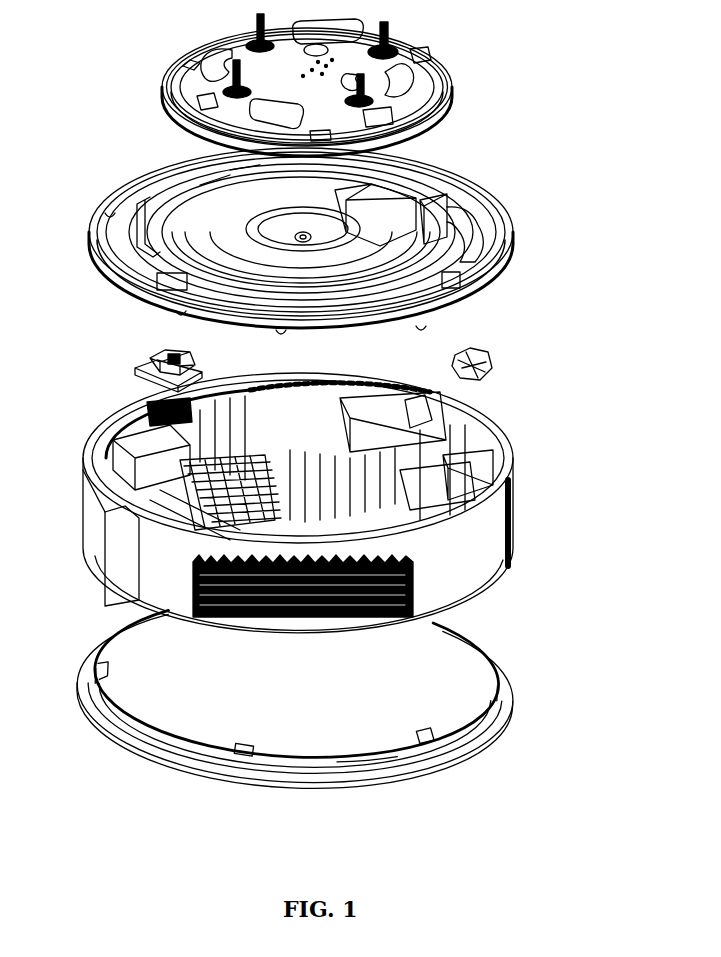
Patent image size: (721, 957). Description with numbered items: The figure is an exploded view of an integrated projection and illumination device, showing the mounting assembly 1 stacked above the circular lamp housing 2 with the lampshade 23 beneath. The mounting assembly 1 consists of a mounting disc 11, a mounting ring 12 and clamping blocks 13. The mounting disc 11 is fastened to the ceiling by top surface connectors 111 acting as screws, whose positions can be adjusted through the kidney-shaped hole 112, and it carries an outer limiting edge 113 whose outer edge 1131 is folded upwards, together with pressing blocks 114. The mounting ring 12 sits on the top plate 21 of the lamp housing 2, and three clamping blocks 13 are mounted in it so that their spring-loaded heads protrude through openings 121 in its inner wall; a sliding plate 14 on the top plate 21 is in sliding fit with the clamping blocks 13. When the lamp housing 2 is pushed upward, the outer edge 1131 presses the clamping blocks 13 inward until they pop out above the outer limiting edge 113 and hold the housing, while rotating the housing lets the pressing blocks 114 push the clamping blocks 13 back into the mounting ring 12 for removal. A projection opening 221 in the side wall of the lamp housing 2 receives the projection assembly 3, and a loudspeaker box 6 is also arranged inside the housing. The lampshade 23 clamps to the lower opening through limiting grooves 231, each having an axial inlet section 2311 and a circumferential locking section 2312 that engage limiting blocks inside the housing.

The mounting assembly 1 is at (582, 162).
The mounting disc 11 is at (420, 108).
The top surface connectors 111 is at (385, 23).
The kidney-shaped hole 112 is at (427, 53).
The outer limiting edge 113 is at (167, 88).
The outer edge 1131 is at (167, 80).
The pressing blocks 114 is at (190, 65).
The mounting ring 12 is at (460, 212).
The openings 121 is at (100, 210).
The clamping blocks 13 is at (163, 355).
The sliding plate 14 is at (135, 380).
The lamp housing 2 is at (515, 488).
The top plate 21 is at (463, 293).
The projection opening 221 is at (113, 568).
The projection assembly 3 is at (103, 523).
The loudspeaker box 6 is at (468, 403).
The lampshade 23 is at (495, 658).
The limiting grooves 231 is at (517, 815).
The inlet section 2311 is at (423, 733).
The locking section 2312 is at (370, 752).